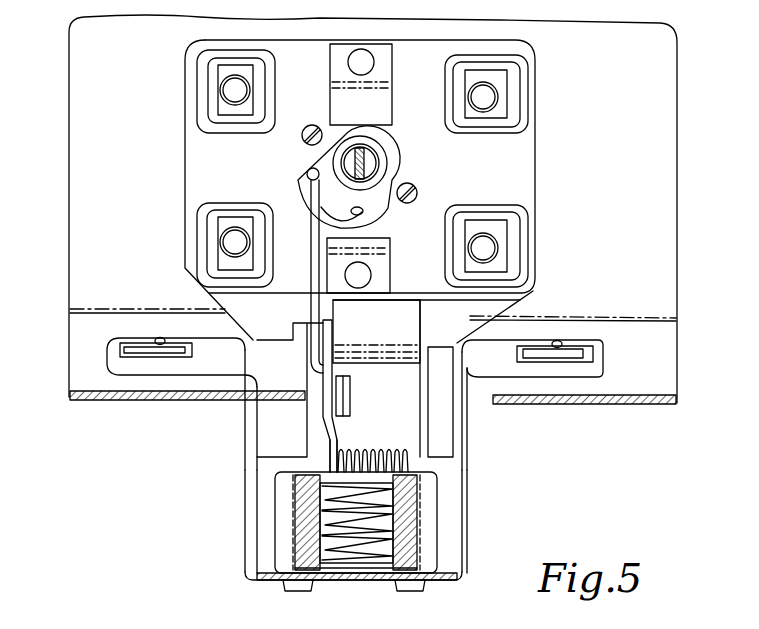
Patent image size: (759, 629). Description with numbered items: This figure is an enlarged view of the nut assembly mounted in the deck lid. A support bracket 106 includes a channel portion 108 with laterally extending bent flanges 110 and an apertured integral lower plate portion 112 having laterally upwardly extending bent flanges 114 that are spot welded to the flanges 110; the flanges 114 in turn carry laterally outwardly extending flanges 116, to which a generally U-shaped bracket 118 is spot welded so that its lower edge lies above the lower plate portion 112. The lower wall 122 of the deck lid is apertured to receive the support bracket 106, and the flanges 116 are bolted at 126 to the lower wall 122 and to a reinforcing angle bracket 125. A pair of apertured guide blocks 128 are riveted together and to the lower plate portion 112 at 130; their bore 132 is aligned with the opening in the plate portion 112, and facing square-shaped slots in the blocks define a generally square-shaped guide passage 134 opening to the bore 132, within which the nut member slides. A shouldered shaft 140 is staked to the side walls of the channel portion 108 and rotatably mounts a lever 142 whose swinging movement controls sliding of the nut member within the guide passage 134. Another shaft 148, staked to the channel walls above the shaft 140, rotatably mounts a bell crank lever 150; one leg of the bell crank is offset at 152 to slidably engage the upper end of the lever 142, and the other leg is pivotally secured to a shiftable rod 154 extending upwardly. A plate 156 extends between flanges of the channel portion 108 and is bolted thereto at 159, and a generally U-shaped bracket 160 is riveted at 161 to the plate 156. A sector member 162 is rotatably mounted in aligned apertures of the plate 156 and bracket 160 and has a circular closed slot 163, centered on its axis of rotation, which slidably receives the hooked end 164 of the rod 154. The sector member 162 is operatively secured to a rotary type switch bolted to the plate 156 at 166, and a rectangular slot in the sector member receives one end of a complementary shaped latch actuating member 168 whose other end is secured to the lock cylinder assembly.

The support bracket 106 is at (463, 560).
The channel portion 108 is at (410, 407).
The bent flanges 110 is at (246, 455).
The lower plate portion 112 is at (454, 583).
The bent flanges 114 is at (248, 507).
The flanges 116 is at (213, 350).
The U-shaped bracket 118 is at (443, 372).
The lower wall 122 is at (107, 399).
The reinforcing angle bracket 125 is at (79, 381).
The bolts 126 is at (156, 340).
The guide blocks 128 is at (276, 517).
The rivets 130 is at (301, 591).
The bore 132 is at (385, 568).
The guide passage 134 is at (382, 523).
The shouldered shaft 140 is at (365, 452).
The lever 142 is at (331, 446).
The shaft 148 is at (398, 333).
The bell crank lever 150 is at (333, 334).
The offset 152 is at (352, 392).
The shiftable rod 154 is at (312, 240).
The plate 156 is at (530, 90).
The bolts 159 is at (245, 68).
The U-shaped bracket 160 is at (387, 101).
The rivets 161 is at (370, 57).
The sector member 162 is at (383, 148).
The circular closed slot 163 is at (364, 217).
The hooked end 164 is at (308, 185).
The bolts 166 is at (308, 127).
The latch actuating member 168 is at (362, 165).